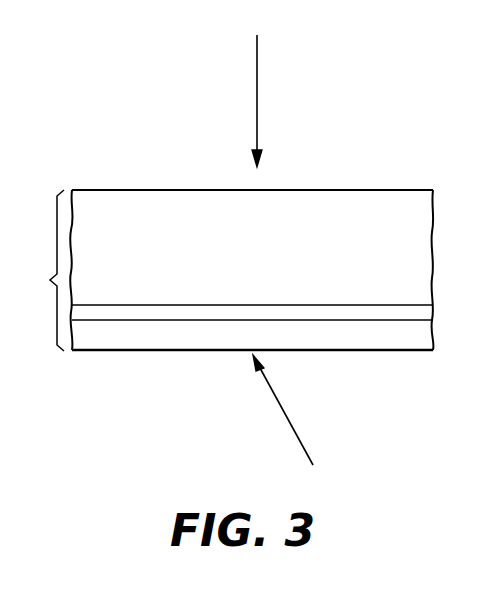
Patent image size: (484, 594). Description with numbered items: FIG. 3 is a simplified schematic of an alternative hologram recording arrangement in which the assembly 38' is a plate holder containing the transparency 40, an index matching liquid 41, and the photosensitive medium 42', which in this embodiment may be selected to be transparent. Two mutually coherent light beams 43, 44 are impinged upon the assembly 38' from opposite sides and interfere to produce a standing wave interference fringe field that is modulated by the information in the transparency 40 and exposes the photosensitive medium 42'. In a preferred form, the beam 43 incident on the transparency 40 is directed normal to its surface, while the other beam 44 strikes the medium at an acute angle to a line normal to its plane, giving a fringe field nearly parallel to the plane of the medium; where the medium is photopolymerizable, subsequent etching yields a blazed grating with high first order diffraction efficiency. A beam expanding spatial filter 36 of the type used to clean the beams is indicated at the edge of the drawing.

The transparency 40 is at (393, 199).
The index matching liquid 41 is at (428, 312).
The photosensitive medium 42' is at (252, 367).
The assembly 38' is at (40, 270).
The light beam 43 is at (258, 73).
The light beam 44 is at (283, 409).
The beam expanding spatial filter 36 is at (475, 398).